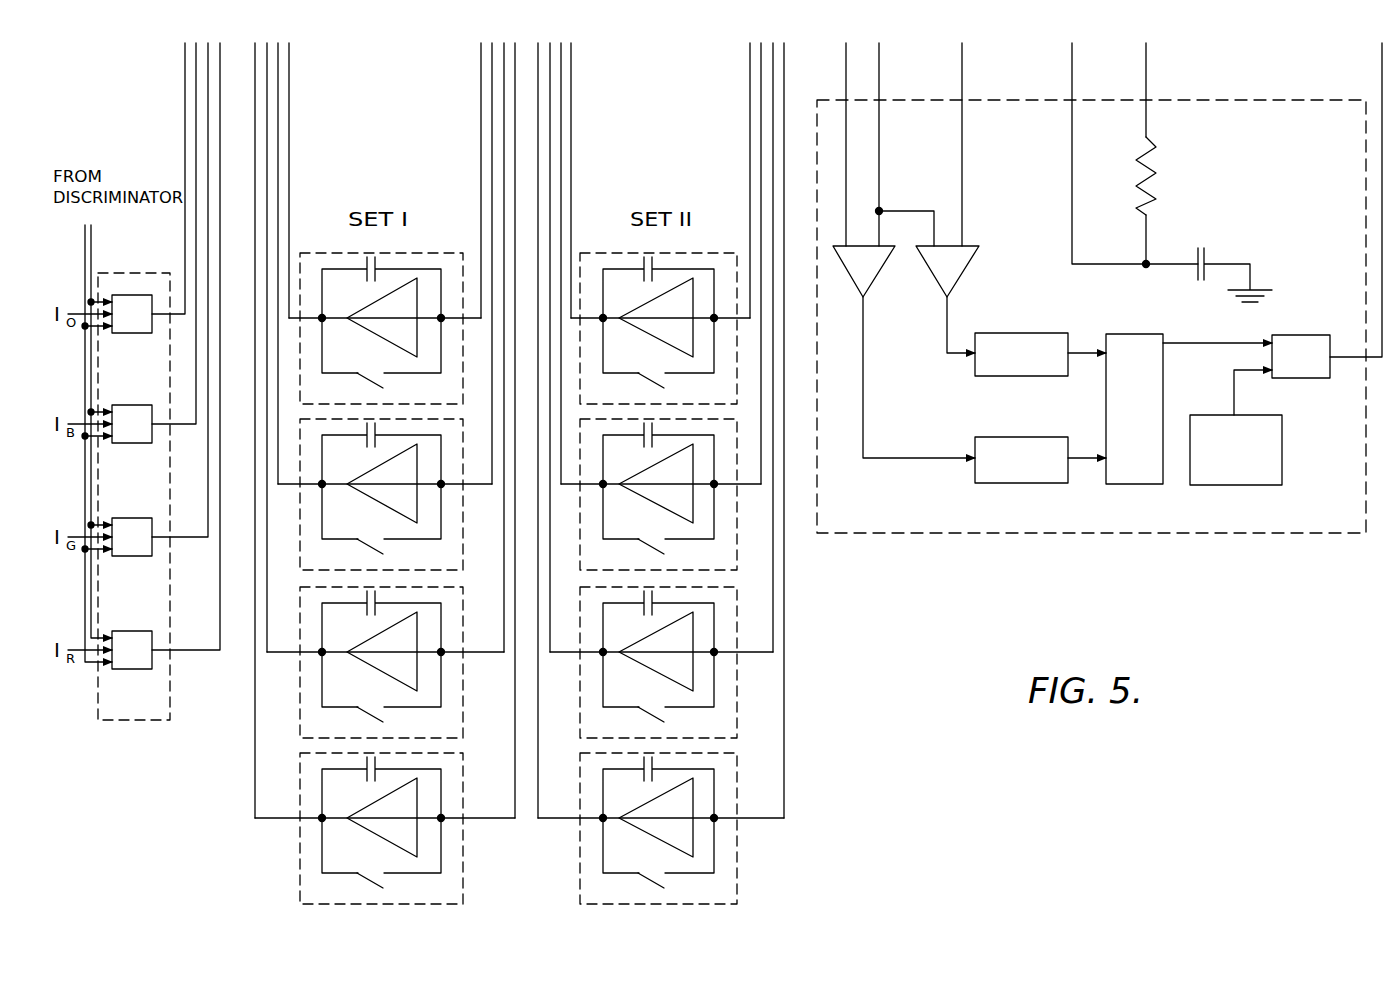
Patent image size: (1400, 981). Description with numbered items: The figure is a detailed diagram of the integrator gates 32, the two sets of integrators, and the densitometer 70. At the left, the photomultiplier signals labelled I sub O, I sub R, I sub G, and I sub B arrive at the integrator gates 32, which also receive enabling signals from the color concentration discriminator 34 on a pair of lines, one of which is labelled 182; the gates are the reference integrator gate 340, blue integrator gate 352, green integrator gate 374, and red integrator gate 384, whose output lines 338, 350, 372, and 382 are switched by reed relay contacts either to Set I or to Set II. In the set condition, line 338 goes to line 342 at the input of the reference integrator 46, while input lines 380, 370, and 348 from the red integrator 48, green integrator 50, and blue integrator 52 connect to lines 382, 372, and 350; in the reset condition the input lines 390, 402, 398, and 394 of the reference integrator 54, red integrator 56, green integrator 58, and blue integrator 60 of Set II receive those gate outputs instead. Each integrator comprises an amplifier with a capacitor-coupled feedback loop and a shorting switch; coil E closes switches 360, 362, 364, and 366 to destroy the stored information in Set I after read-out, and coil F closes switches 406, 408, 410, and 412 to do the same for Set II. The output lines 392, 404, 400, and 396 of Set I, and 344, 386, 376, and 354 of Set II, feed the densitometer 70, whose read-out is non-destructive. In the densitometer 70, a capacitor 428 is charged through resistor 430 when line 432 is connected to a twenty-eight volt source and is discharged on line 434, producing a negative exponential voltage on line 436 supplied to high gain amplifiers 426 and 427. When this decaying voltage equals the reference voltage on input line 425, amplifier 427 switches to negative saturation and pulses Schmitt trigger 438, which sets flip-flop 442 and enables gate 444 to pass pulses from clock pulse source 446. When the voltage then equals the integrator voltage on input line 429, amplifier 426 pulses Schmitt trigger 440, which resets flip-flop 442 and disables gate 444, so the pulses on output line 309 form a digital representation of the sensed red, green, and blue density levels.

The color concentration discriminator 34 is at (85, 241).
The discriminator output line 182 is at (91, 241).
The integrator gates 32 is at (156, 272).
The reference integrator gate 340 is at (128, 334).
The blue integrator gate 352 is at (128, 444).
The green integrator gate 374 is at (128, 557).
The red integrator gate 384 is at (126, 670).
The output line 338 is at (185, 73).
The output line 350 is at (196, 96).
The output line 372 is at (208, 118).
The output line 382 is at (220, 139).
The input line 348 is at (255, 80).
The input line 370 is at (267, 99).
The input line 380 is at (278, 119).
The line 342 is at (289, 138).
The output line 396 is at (515, 78).
The output line 400 is at (504, 96).
The output line 404 is at (492, 118).
The output line 392 is at (481, 136).
The reference integrator 46 is at (425, 253).
The red integrator 48 is at (467, 535).
The green integrator 50 is at (467, 713).
The blue integrator 52 is at (465, 884).
The switch 360 is at (368, 384).
The switch 362 is at (368, 550).
The switch 364 is at (368, 718).
The switch 366 is at (368, 884).
The input line 394 is at (538, 80).
The input line 398 is at (550, 99).
The input line 402 is at (561, 119).
The input line 390 is at (571, 138).
The output line 354 is at (784, 77).
The output line 376 is at (773, 96).
The output line 386 is at (761, 117).
The output line 344 is at (750, 136).
The reference integrator 54 is at (730, 253).
The red integrator 56 is at (739, 535).
The green integrator 58 is at (739, 713).
The blue integrator 60 is at (737, 884).
The switch 406 is at (649, 384).
The switch 408 is at (649, 550).
The switch 410 is at (649, 718).
The switch 412 is at (649, 884).
The densitometer 70 is at (1030, 534).
The input line 429 is at (846, 76).
The line 436 is at (879, 78).
The input line 425 is at (962, 82).
The line 434 is at (1072, 82).
The line 432 is at (1146, 82).
The resistor 430 is at (1156, 186).
The capacitor 428 is at (1208, 252).
The high gain amplifier 426 is at (876, 278).
The high gain amplifier 427 is at (968, 276).
The Schmitt trigger 438 is at (985, 377).
The Schmitt trigger 440 is at (983, 484).
The flip-flop 442 is at (1150, 334).
The gate 444 is at (1300, 335).
The clock pulse source 446 is at (1283, 441).
The output line 309 is at (1382, 78).